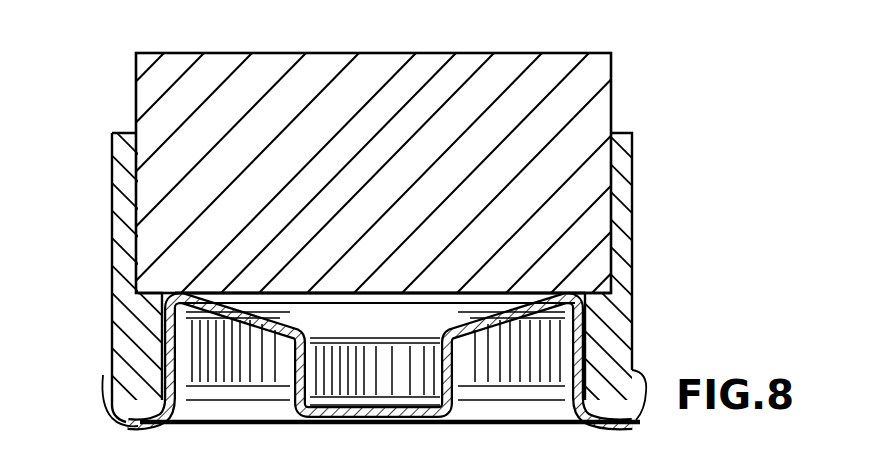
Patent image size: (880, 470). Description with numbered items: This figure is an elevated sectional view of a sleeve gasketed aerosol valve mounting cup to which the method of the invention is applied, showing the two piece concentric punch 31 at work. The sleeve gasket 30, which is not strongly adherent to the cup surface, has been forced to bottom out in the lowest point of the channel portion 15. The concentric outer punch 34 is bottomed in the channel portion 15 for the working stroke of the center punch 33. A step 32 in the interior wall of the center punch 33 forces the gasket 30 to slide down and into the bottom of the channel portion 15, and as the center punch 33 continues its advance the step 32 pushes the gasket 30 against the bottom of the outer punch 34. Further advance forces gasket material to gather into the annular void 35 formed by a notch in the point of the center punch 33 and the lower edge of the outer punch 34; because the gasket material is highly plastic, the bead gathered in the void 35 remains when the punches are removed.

The channel portion 15 is at (135, 430).
The sleeve gasket 30 is at (165, 345).
The two piece concentric punch 31 is at (617, 52).
The step 32 is at (590, 299).
The center punch 33 is at (611, 88).
The concentric outer punch 34 is at (627, 152).
The annular void 35 is at (645, 416).